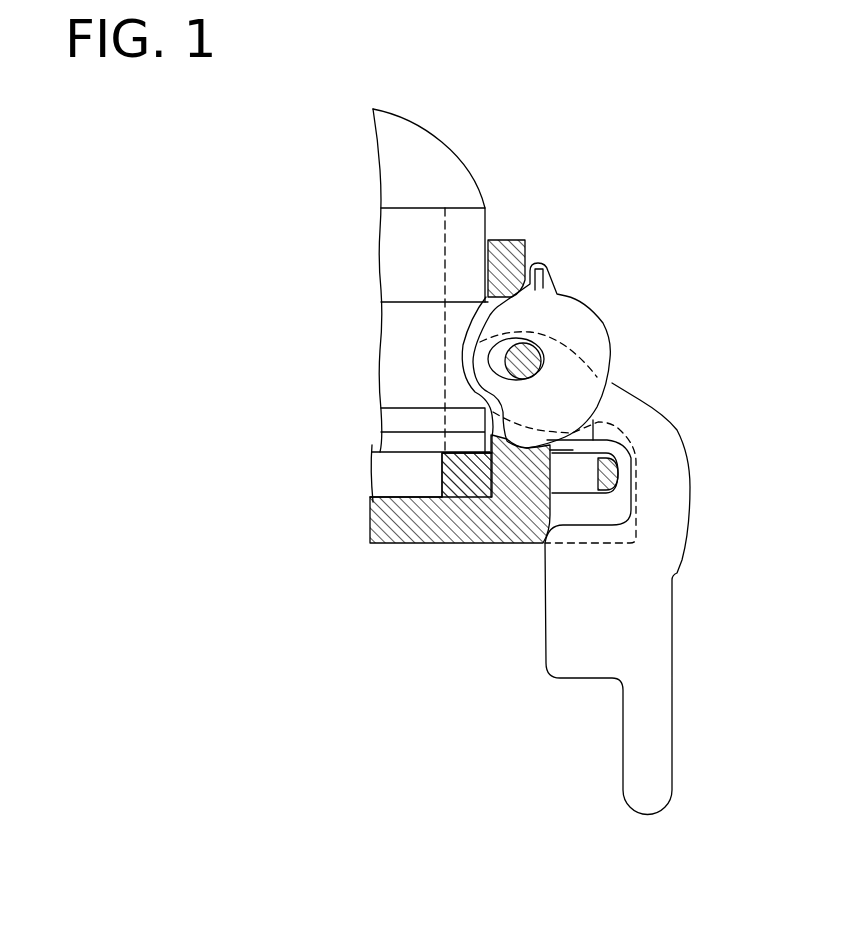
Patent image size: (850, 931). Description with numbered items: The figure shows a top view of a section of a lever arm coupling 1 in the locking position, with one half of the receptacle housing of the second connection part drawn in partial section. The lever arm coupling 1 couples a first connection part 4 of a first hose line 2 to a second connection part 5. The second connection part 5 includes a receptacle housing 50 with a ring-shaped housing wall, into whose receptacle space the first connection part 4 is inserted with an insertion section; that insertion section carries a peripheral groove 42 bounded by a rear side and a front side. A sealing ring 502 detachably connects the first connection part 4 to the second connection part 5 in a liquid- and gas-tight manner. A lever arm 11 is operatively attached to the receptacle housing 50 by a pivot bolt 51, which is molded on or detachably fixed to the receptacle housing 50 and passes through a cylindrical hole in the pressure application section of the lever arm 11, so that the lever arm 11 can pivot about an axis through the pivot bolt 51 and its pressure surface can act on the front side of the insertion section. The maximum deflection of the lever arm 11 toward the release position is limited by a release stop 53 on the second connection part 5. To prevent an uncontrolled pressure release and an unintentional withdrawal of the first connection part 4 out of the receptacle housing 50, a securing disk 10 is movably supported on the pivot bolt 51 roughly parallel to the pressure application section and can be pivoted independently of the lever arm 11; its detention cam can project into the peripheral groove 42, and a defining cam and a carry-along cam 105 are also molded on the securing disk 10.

The lever arm coupling 1 is at (320, 493).
The first hose line 2 is at (408, 166).
The first connection part 4 is at (363, 333).
The peripheral groove 42 is at (457, 382).
The second connection part 5 is at (467, 570).
The receptacle housing 50 is at (470, 543).
The sealing ring 502 is at (442, 494).
The securing disk 10 is at (617, 355).
The pivot bolt 51 is at (540, 350).
The release stop 53 is at (513, 258).
The carry-along cam 105 is at (543, 288).
The lever arm 11 is at (637, 636).